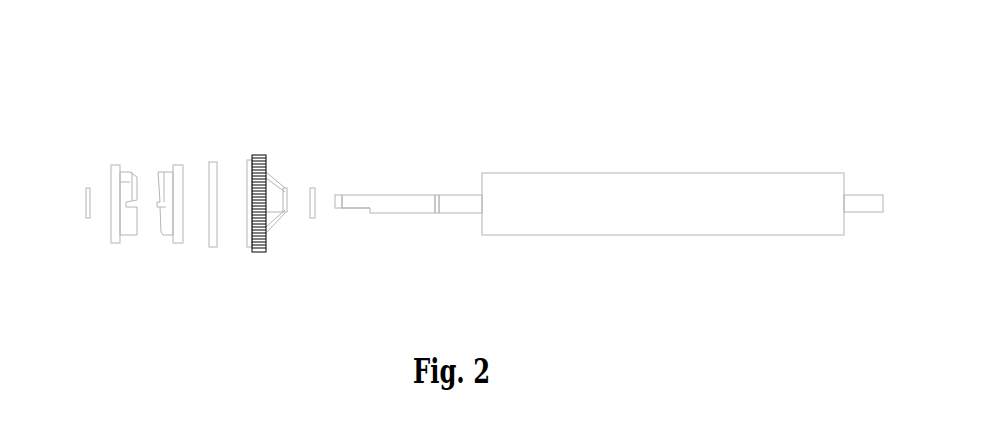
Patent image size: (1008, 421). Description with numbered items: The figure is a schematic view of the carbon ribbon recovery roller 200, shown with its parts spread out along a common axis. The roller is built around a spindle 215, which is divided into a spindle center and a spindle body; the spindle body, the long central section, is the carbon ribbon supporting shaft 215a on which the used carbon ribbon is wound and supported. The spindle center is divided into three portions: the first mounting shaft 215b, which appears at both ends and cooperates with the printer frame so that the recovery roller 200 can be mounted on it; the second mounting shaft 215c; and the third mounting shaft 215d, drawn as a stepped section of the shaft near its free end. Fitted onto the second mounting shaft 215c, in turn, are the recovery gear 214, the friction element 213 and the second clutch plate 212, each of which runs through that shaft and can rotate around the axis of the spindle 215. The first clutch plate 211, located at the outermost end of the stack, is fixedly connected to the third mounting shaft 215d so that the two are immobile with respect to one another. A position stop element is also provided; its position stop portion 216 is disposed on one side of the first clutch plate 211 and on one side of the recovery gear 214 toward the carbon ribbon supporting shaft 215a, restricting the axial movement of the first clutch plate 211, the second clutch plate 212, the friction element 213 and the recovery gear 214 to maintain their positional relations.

The carbon ribbon recovery roller 200 is at (135, 35).
The first clutch plate 211 is at (122, 218).
The second clutch plate 212 is at (175, 223).
The friction element 213 is at (210, 225).
The recovery gear 214 is at (263, 215).
The spindle 215 is at (604, 224).
The carbon ribbon supporting shaft 215a is at (625, 192).
The first mounting shaft 215b is at (458, 202).
The second mounting shaft 215c is at (390, 215).
The third mounting shaft 215d is at (360, 207).
The position stop portion 216 is at (87, 187).